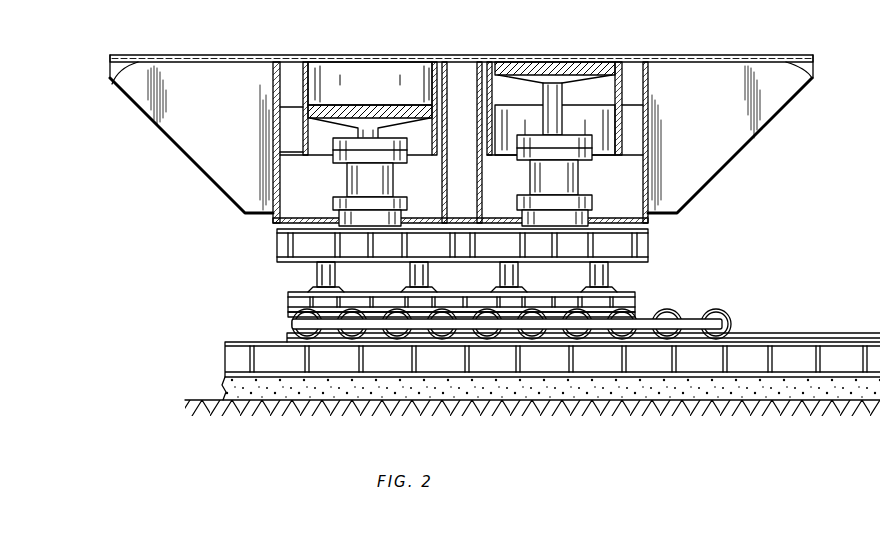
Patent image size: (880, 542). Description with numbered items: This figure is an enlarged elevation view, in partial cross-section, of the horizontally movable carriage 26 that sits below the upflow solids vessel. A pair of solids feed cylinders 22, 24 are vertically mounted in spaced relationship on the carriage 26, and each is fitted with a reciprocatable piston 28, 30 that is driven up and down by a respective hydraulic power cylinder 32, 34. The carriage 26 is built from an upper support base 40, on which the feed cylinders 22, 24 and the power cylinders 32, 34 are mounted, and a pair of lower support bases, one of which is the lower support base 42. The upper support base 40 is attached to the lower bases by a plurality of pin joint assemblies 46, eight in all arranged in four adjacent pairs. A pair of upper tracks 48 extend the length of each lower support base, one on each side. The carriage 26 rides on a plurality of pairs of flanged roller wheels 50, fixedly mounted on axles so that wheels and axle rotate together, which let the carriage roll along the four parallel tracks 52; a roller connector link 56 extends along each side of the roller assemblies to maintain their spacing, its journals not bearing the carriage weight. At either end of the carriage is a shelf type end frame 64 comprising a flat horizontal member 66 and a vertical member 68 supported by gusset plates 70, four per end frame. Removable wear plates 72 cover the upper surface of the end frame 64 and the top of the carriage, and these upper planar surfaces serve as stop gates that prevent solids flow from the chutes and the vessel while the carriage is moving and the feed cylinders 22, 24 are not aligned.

The solids feed cylinder 22 is at (303, 80).
The solids feed cylinder 24 is at (622, 127).
The carriage 26 is at (448, 274).
The reciprocatable piston 28 is at (323, 128).
The reciprocatable piston 30 is at (603, 85).
The hydraulic power cylinder 32 is at (347, 182).
The hydraulic power cylinder 34 is at (577, 180).
The upper support base 40 is at (647, 243).
The lower support base 42 is at (635, 298).
The pin joint assembly 46 is at (317, 283).
The upper track 48 is at (288, 310).
The flanged roller wheel 50 is at (310, 336).
The track 52 is at (758, 335).
The roller connector link 56 is at (680, 320).
The shelf type end frame 64 is at (464, 113).
The flat horizontal member 66 is at (120, 90).
The vertical member 68 is at (273, 192).
The gusset plate 70 is at (195, 143).
The removable wear plate 72 is at (227, 55).